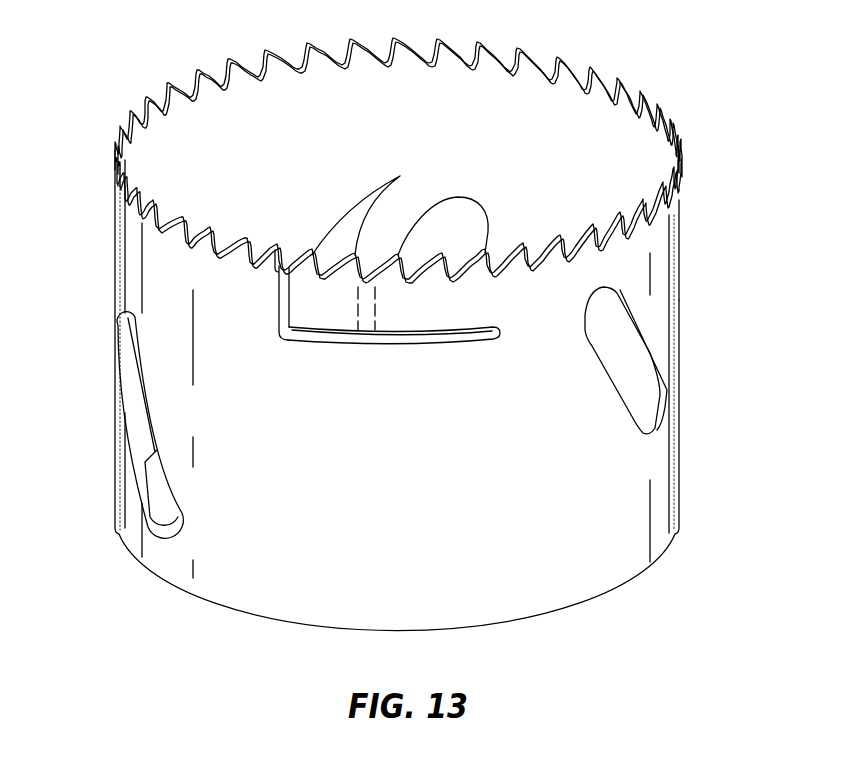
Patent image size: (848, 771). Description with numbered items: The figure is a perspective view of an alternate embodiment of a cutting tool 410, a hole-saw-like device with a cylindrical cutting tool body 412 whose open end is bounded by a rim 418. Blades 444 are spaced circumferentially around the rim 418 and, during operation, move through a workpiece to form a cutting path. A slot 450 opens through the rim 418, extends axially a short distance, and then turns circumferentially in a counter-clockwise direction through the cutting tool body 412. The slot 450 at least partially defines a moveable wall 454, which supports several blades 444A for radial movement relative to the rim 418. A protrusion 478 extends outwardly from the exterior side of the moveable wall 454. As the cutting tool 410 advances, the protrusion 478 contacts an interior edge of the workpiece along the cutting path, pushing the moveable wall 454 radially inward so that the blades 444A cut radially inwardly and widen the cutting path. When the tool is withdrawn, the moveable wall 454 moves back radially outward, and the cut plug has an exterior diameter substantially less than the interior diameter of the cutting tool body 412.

The cutting tool 410 is at (120, 43).
The cutting tool body 412 is at (680, 459).
The rim 418 is at (680, 195).
The blades 444 is at (224, 235).
The blades 444A is at (400, 202).
The slot 450 is at (277, 293).
The moveable wall 454 is at (407, 307).
The protrusion 478 is at (362, 302).